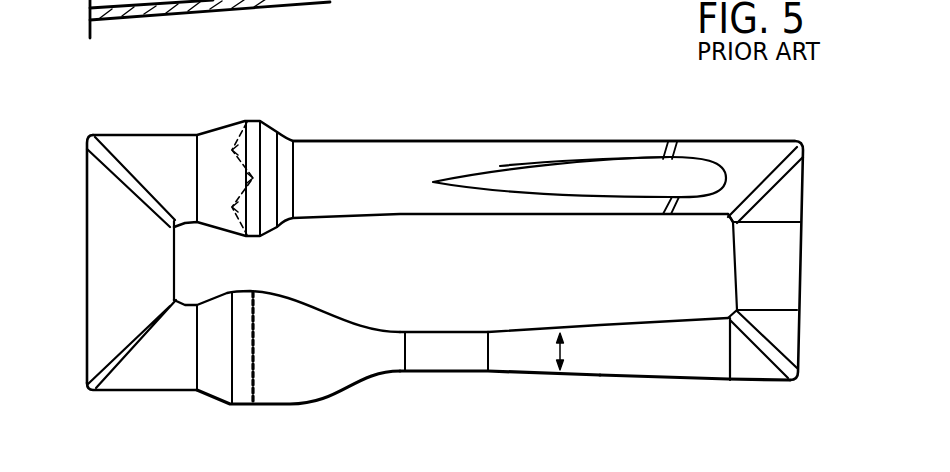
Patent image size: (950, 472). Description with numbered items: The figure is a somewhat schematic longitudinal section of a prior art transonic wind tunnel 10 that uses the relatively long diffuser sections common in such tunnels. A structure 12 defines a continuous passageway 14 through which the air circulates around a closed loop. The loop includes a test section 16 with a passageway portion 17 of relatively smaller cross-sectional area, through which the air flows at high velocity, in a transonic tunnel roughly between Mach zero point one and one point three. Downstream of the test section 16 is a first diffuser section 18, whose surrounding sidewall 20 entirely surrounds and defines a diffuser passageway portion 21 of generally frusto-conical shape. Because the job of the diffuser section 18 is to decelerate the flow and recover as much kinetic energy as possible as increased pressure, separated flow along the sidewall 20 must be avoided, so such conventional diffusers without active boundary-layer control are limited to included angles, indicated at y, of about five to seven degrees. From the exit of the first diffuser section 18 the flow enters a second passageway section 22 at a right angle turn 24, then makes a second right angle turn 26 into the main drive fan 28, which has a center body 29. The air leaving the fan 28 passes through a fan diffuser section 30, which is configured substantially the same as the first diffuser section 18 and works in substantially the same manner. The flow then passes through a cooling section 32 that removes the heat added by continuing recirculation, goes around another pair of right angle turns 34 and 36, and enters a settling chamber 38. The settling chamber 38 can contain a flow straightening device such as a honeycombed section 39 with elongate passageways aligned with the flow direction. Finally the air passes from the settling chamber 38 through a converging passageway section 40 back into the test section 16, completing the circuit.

The wind tunnel 10 is at (752, 123).
The structure 12 is at (368, 133).
The continuous passageway 14 is at (395, 150).
The test section 16 is at (437, 375).
The passageway portion 17 is at (470, 360).
The first diffuser section 18 is at (622, 382).
The sidewall 20 is at (665, 382).
The diffuser passageway portion 21 is at (530, 362).
The second passageway section 22 is at (785, 288).
The right angle turn 24 is at (787, 355).
The second right angle turn 26 is at (790, 188).
The main drive fan 28 is at (668, 151).
The center body 29 is at (565, 173).
The fan diffuser section 30 is at (438, 152).
The cooling section 32 is at (245, 122).
The right angle turn 34 is at (112, 164).
The right angle turn 36 is at (110, 366).
The settling chamber 38 is at (240, 393).
The honeycombed section 39 is at (255, 362).
The converging passageway section 40 is at (347, 378).
The included angle y is at (565, 352).